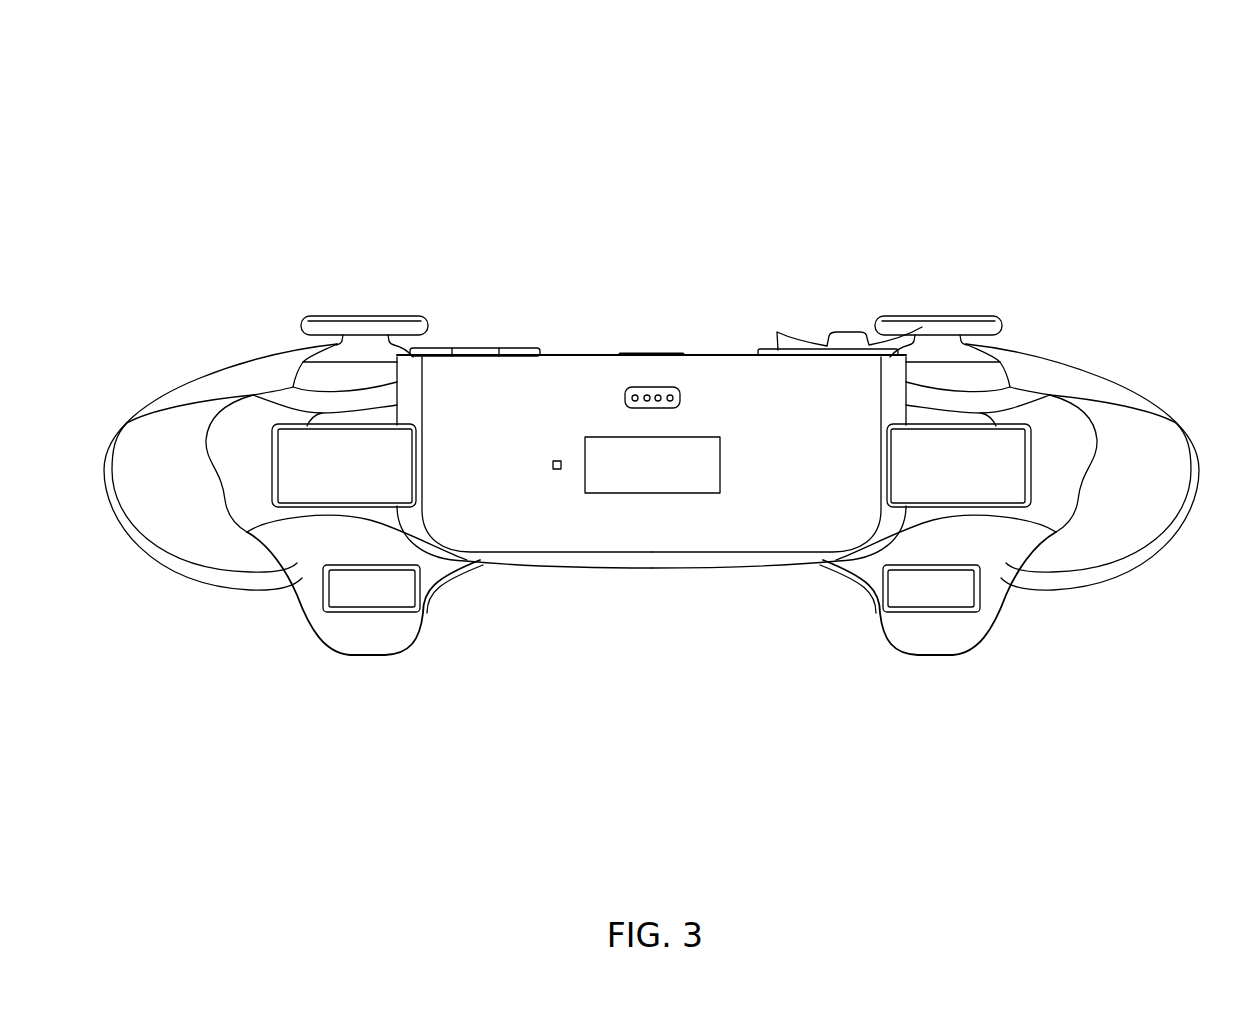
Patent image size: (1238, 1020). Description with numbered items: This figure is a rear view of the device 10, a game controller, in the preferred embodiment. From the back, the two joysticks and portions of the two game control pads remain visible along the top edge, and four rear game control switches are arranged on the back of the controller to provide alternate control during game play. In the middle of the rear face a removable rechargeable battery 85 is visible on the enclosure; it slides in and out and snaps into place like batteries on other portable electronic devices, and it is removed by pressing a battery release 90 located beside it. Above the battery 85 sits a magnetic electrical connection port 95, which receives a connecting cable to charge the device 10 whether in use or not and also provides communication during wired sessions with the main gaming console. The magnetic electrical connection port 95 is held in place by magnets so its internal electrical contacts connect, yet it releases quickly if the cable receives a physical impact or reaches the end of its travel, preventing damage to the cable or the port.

The device 10 is at (306, 193).
The removable rechargeable battery 85 is at (680, 472).
The battery release 90 is at (557, 470).
The magnetic electrical connection port 95 is at (653, 392).